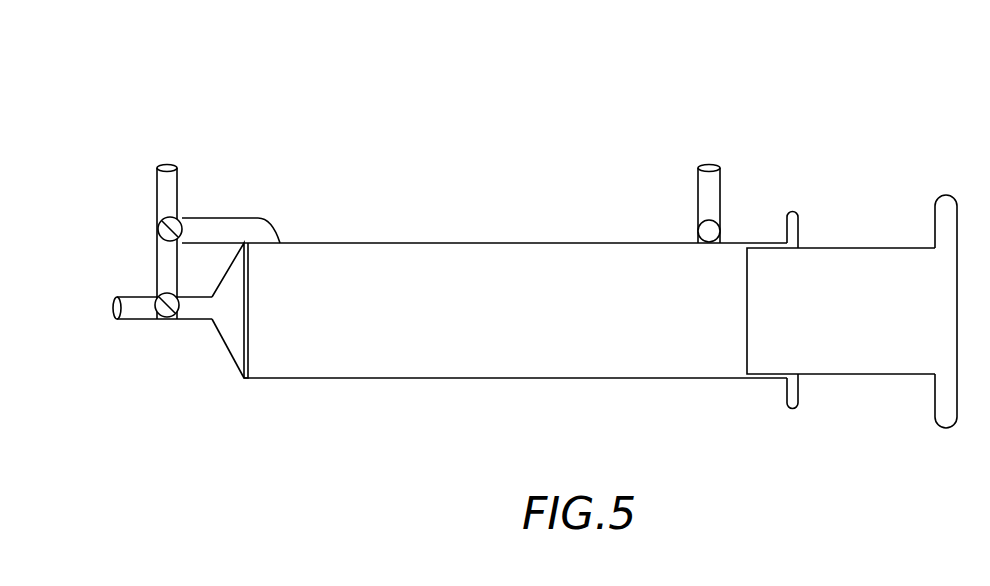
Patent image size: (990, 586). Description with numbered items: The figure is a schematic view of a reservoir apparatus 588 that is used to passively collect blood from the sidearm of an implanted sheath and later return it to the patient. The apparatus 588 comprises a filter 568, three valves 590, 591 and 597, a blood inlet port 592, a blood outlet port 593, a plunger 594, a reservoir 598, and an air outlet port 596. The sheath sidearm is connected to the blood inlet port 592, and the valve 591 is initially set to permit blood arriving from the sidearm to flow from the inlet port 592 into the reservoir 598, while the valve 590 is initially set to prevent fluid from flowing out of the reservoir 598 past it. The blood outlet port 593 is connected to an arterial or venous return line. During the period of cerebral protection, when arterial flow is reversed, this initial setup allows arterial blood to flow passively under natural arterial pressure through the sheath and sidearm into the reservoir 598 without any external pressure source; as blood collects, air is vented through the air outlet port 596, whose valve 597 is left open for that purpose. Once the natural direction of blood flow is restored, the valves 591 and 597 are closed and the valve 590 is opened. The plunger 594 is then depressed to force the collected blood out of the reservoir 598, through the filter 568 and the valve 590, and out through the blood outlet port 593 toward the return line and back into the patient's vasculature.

The reservoir apparatus 588 is at (496, 262).
The valve 590 is at (158, 330).
The valve 591 is at (144, 226).
The blood inlet port 592 is at (167, 160).
The blood outlet port 593 is at (112, 307).
The plunger 594 is at (870, 394).
The air outlet port 596 is at (731, 229).
The valve 597 is at (698, 217).
The reservoir 598 is at (618, 392).
The filter 568 is at (250, 353).